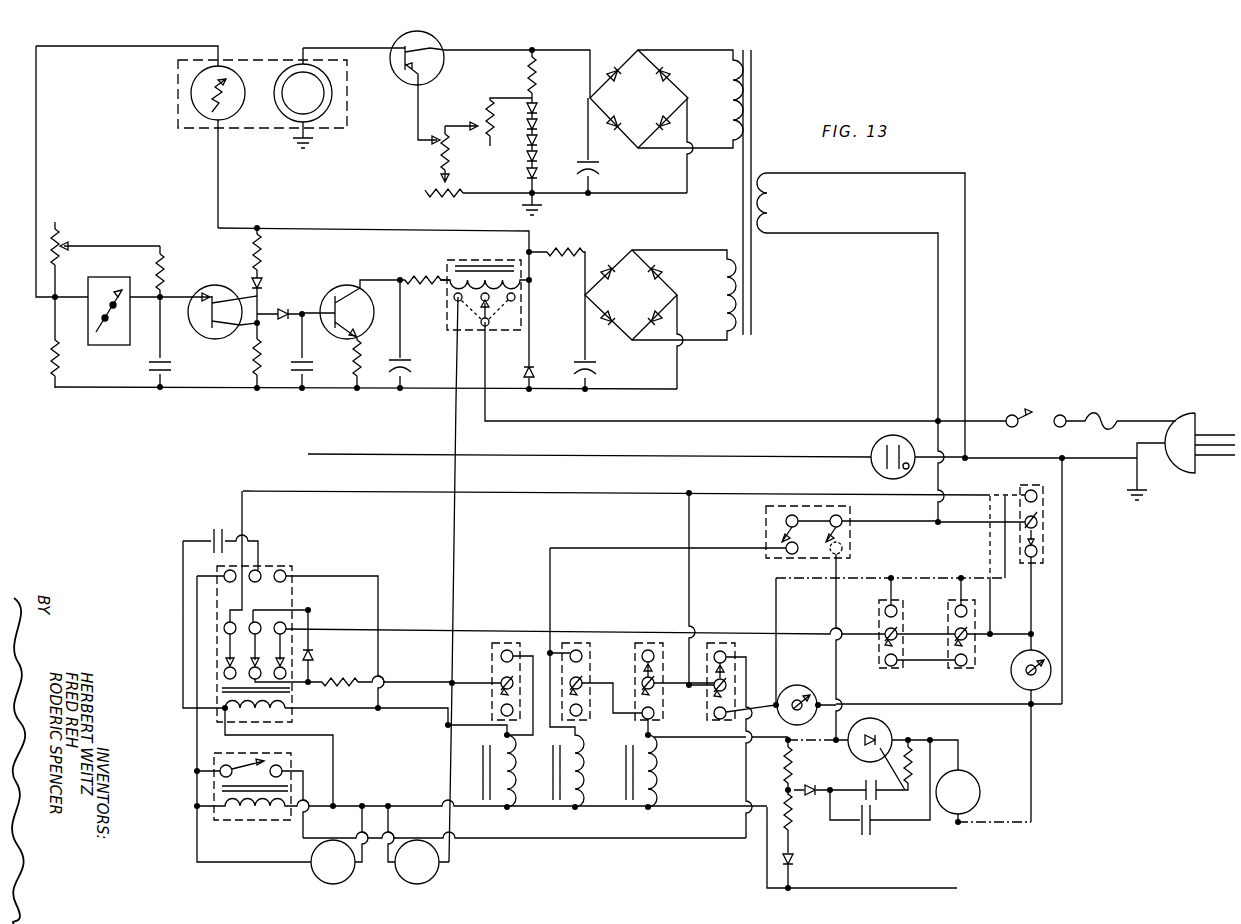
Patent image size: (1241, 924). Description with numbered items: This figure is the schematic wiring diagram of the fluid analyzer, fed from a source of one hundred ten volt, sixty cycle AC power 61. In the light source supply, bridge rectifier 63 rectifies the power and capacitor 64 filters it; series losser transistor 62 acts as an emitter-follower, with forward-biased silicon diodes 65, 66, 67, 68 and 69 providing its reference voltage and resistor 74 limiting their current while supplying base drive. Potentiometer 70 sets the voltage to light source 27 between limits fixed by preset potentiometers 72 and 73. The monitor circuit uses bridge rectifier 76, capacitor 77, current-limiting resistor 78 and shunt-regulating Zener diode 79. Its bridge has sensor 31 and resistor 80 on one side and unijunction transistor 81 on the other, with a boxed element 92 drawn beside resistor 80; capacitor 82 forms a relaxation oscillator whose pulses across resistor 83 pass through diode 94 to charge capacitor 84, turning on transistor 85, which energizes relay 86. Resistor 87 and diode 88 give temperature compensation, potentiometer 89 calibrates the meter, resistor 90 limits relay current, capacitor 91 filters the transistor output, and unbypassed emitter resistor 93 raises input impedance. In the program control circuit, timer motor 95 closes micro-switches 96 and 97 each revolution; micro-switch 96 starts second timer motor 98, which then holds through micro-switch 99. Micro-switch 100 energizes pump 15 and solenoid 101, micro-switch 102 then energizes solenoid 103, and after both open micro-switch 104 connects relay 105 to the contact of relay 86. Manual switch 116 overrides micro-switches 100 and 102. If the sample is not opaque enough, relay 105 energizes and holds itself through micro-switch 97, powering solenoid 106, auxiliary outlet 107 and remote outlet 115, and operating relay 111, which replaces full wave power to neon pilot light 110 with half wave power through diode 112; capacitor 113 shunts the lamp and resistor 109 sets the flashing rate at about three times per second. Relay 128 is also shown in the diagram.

The pump 15 is at (958, 792).
The light source 27 is at (303, 93).
The test cell sensor 31 is at (250, 96).
The source of AC electrical power 61 is at (1184, 418).
The series losser circuit transistor 62 is at (394, 24).
The full wave bridge rectifier 63 is at (639, 99).
The capacitor 64 is at (601, 176).
The silicon diode 65 is at (537, 104).
The silicon diode 66 is at (542, 122).
The silicon diode 67 is at (537, 138).
The silicon diode 68 is at (537, 154).
The silicon diode 69 is at (527, 174).
The potentiometer 70 is at (440, 150).
The preset potentiometer 72 is at (482, 114).
The preset potentiometer 73 is at (444, 196).
The resistor 74 is at (523, 69).
The full wave bridge rectifier 76 is at (631, 295).
The capacitor 77 is at (597, 370).
The resistor 78 is at (552, 250).
The Zener diode 79 is at (530, 370).
The resistor 80 is at (42, 360).
The unijunction transistor 81 is at (212, 287).
The capacitor 82 is at (172, 364).
The resistor 83 is at (244, 364).
The capacitor 84 is at (308, 368).
The transistor 85 is at (345, 286).
The relay 86 is at (490, 264).
The resistor 87 is at (245, 268).
The diode 88 is at (262, 282).
The meter calibration potentiometer 89 is at (121, 248).
The resistor 90 is at (432, 262).
The capacitor 91 is at (409, 367).
The photocell 92 is at (101, 346).
The emitter resistor 93 is at (361, 360).
The diode 94 is at (278, 306).
The timer motor 95 is at (1010, 675).
The micro-switch 96 is at (952, 636).
The micro-switch 97 is at (896, 602).
The second timer motor 98 is at (804, 680).
The micro-switch 99 is at (731, 646).
The micro-switch 100 is at (654, 708).
The solenoid 101 is at (648, 770).
The micro-switch 102 is at (594, 681).
The solenoid 103 is at (578, 758).
The micro-switch 104 is at (482, 668).
The relay 105 is at (200, 635).
The solenoid 106 is at (512, 766).
The auxiliary outlet socket 107 is at (338, 882).
The resistor 109 is at (328, 668).
The neon pilot light 110 is at (876, 450).
The relay 111 is at (246, 826).
The diode 112 is at (313, 656).
The capacitor 113 is at (227, 516).
The remote outlet 115 is at (440, 882).
The manually operated switch 116 is at (847, 540).
The relay 128 is at (1022, 486).